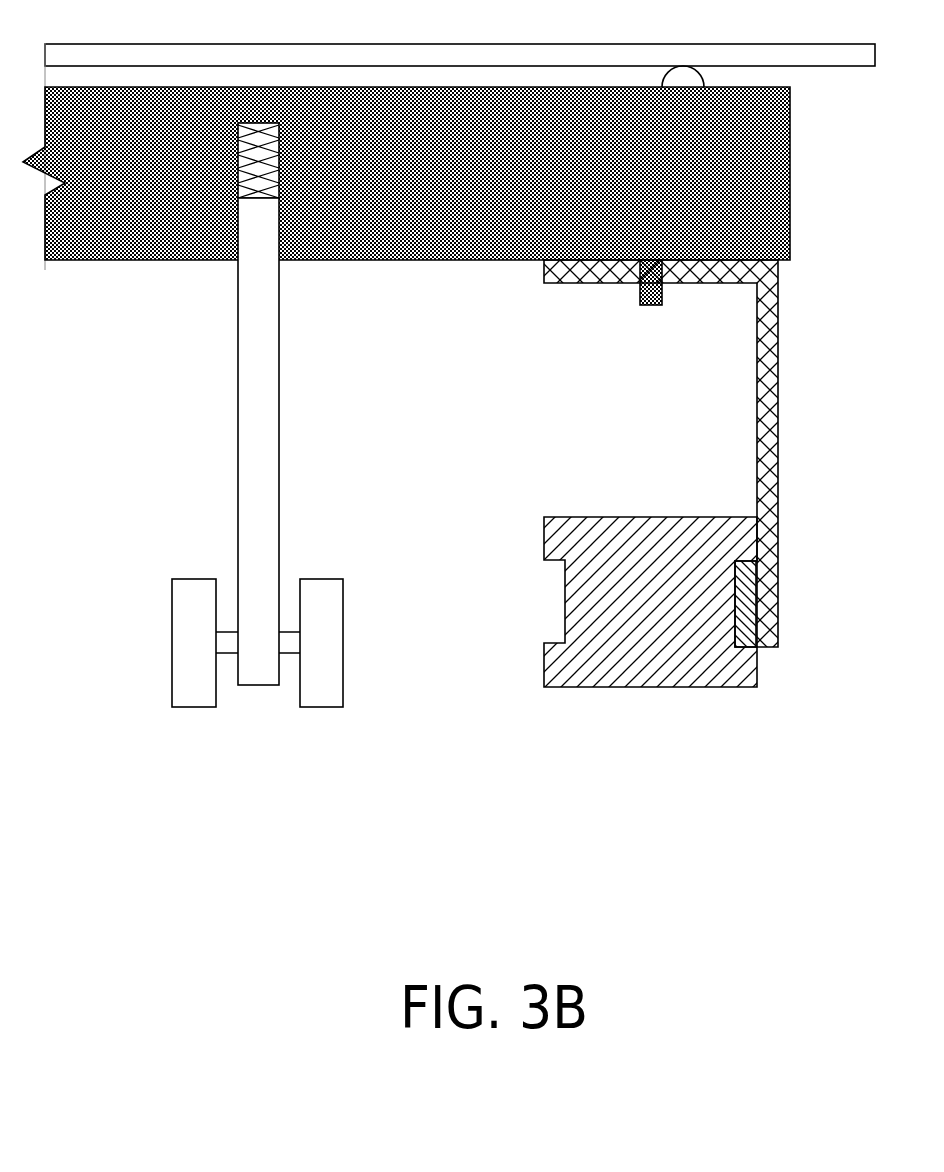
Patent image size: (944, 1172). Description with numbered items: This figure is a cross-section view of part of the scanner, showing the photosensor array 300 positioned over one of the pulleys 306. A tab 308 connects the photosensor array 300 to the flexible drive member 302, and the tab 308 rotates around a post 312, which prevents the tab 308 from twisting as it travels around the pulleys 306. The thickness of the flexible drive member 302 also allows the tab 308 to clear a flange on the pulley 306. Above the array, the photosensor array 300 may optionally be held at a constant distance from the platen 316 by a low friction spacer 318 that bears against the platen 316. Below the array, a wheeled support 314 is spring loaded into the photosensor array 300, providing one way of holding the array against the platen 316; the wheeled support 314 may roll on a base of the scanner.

The photosensor array 300 is at (790, 170).
The flexible drive member 302 is at (745, 597).
The pulley 306 is at (652, 516).
The tab 308 is at (568, 284).
The post 312 is at (651, 306).
The wheeled support 314 is at (279, 468).
The platen 316 is at (460, 44).
The low friction spacer 318 is at (683, 66).